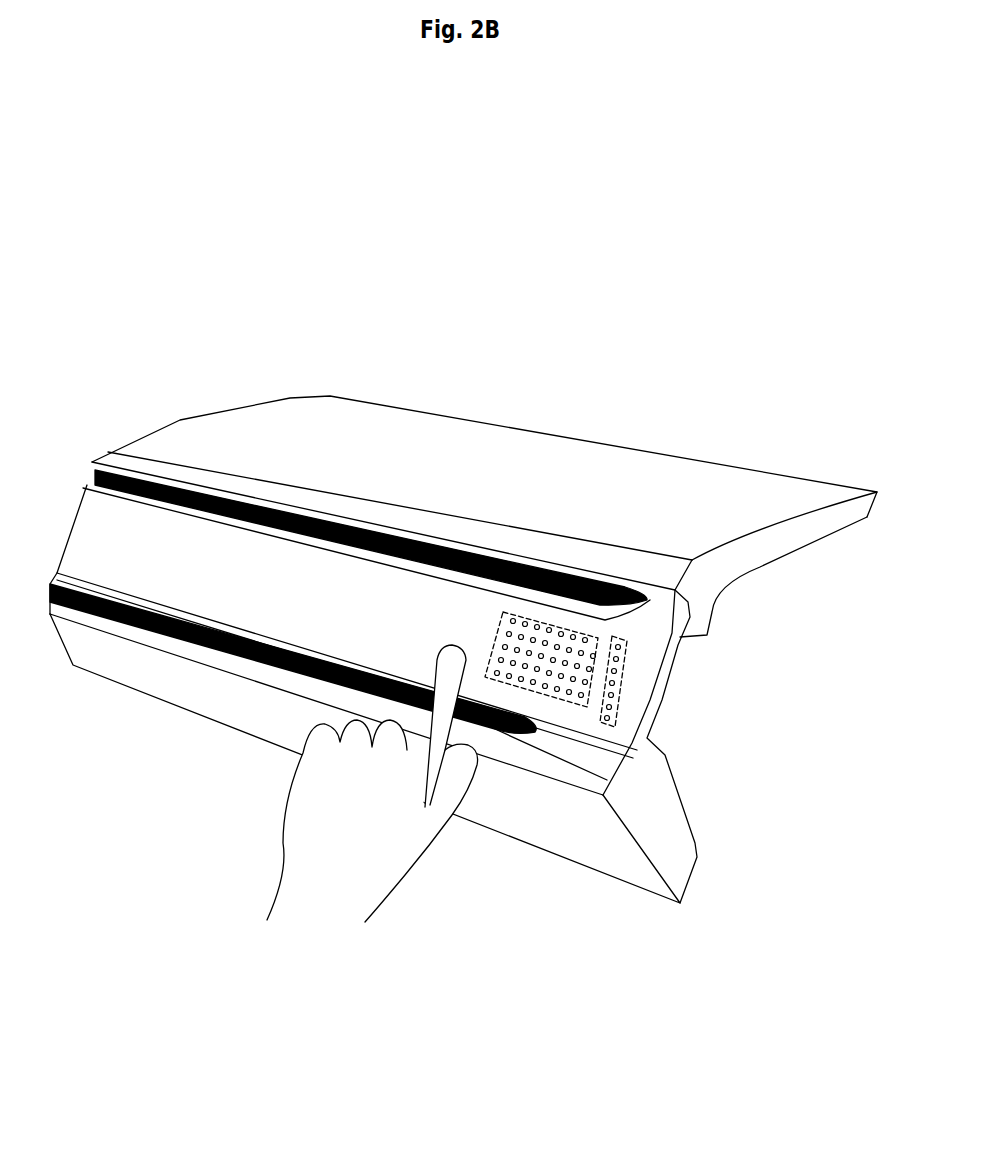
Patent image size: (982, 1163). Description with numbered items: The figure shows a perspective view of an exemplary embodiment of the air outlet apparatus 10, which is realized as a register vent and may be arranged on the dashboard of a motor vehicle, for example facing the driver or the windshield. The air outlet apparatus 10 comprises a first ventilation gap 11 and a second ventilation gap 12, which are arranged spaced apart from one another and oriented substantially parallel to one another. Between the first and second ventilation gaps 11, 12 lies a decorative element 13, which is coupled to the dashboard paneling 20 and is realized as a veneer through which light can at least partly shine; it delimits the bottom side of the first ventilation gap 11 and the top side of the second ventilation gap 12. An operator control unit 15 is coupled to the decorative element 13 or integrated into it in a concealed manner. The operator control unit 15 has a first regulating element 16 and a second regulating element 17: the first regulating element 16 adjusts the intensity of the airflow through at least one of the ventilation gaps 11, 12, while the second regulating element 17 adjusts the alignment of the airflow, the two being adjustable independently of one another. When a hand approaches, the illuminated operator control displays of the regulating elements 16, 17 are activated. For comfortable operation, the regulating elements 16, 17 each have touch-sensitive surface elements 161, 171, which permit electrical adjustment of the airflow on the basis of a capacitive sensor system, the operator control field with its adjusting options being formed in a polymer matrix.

The air outlet apparatus 10 is at (725, 320).
The dashboard paneling 20 is at (297, 447).
The first ventilation gap 11 is at (197, 497).
The second ventilation gap 12 is at (142, 620).
The decorative element 13 is at (338, 603).
The operator control unit 15 is at (662, 628).
The first regulating element 16 is at (681, 801).
The touch-sensitive surface element 161 is at (630, 677).
The second regulating element 17 is at (606, 537).
The touch-sensitive surface element 171 is at (592, 633).